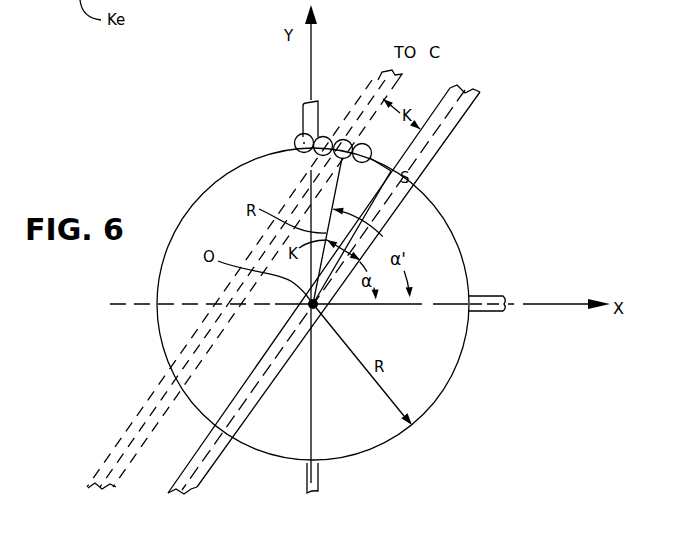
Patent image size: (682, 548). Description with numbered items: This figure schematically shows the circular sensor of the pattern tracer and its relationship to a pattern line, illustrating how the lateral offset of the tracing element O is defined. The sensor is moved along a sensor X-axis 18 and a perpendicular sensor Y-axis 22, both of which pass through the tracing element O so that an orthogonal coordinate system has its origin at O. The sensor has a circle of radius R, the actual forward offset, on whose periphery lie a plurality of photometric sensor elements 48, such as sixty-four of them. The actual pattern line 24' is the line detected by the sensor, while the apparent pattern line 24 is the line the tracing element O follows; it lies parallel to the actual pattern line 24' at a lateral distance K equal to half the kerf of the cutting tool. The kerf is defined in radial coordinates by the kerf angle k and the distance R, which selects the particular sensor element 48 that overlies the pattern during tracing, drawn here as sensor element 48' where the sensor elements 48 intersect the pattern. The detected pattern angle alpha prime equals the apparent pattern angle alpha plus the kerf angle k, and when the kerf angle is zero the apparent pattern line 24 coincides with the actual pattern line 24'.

The sensor X-axis 18 is at (531, 303).
The sensor Y-axis 22 is at (312, 52).
The apparent pattern line 24 is at (336, 289).
The actual pattern line 24' is at (244, 273).
The sensor elements 48 is at (322, 139).
The ball in displaced position 48' is at (300, 104).